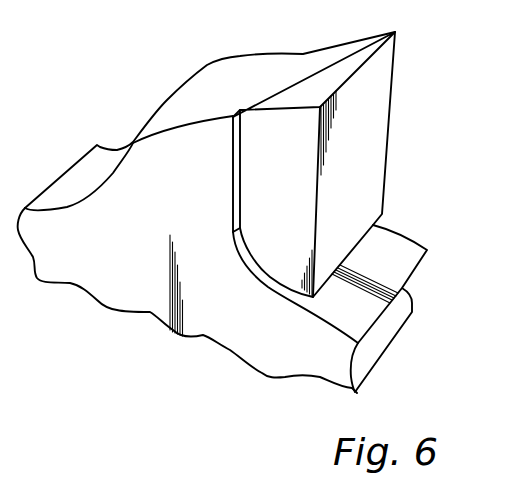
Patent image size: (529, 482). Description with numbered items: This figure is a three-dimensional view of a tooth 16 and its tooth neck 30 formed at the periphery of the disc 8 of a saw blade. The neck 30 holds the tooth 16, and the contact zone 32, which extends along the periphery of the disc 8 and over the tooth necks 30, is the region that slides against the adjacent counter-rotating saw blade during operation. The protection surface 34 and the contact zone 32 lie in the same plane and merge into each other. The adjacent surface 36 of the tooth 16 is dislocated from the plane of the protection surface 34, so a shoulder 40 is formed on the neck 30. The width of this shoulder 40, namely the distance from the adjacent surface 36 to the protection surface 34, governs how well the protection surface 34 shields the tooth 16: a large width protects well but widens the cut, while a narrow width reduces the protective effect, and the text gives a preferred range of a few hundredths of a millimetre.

The disc 8 is at (105, 308).
The tooth 16 is at (397, 95).
The tooth neck 30 is at (213, 91).
The contact zone 32 is at (272, 352).
The protection surface 34 is at (192, 165).
The adjacent surface 36 is at (283, 123).
The shoulder 40 is at (237, 147).